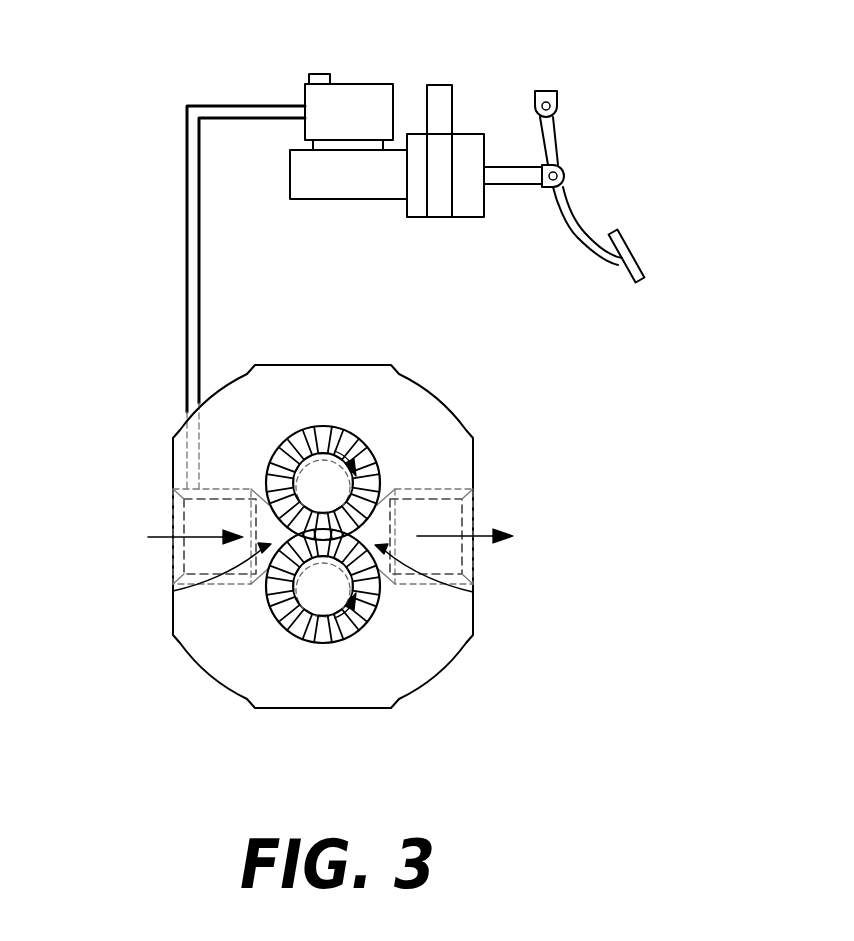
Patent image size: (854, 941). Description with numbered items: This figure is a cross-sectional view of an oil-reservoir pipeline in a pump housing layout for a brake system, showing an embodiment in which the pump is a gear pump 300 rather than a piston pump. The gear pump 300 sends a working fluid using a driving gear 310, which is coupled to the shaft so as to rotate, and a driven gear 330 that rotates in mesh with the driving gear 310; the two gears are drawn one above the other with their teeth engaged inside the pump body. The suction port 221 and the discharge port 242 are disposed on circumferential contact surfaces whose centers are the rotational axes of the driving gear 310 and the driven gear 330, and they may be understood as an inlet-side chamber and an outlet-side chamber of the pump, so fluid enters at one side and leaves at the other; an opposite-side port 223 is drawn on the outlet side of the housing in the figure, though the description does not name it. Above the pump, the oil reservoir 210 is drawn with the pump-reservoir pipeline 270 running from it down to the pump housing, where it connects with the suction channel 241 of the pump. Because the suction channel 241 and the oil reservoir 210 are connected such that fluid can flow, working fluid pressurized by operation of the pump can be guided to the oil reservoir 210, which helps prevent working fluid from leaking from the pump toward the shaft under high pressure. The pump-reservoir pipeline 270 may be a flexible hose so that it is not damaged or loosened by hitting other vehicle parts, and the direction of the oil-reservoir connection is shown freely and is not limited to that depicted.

The oil reservoir 210 is at (362, 92).
The pump-reservoir pipeline 270 is at (185, 262).
The gear pump 300 is at (443, 384).
The driving gear 310 is at (323, 642).
The driven gear 330 is at (323, 432).
The suction port 221 is at (192, 488).
The outlet port 223 is at (453, 488).
The suction channel 241 is at (173, 591).
The discharge port 242 is at (473, 592).